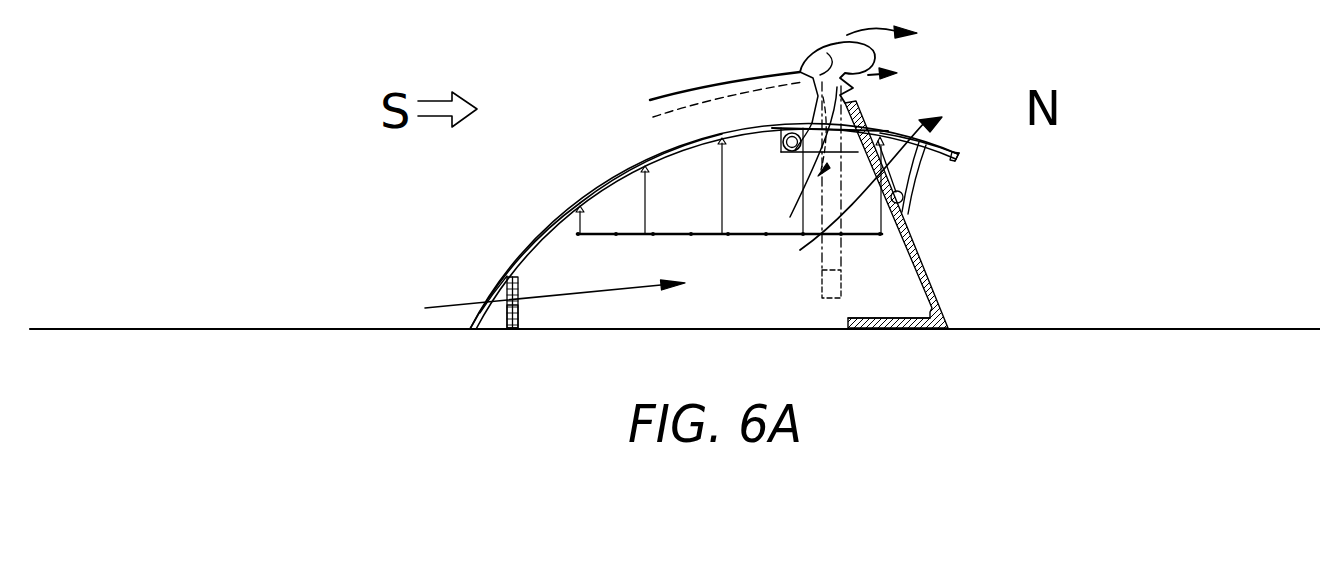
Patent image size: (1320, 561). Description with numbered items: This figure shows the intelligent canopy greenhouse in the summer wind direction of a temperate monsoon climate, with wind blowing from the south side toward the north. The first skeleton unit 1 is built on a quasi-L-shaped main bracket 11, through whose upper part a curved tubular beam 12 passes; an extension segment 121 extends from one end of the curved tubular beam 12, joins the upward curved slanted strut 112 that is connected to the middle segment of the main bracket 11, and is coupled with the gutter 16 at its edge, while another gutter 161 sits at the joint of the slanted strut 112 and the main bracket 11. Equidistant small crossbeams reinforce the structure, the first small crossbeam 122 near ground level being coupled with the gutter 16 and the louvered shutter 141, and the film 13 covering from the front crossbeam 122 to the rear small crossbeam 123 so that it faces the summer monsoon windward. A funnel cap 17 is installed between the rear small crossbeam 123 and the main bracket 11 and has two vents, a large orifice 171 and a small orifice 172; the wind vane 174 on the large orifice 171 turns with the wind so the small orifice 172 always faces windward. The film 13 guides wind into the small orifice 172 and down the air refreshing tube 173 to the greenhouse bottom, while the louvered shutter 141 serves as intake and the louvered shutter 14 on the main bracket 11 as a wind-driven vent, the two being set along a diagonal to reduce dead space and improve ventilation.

The first skeleton unit 1 is at (590, 111).
The main bracket 11 is at (937, 292).
The upward curved slanted strut 112 is at (905, 201).
The curved tubular beam 12 is at (547, 224).
The extension segment 121 is at (953, 148).
The first small crossbeam 122 is at (522, 262).
The rear small crossbeam 123 is at (778, 141).
The film 13 is at (597, 181).
The louvered shutter 14 is at (926, 168).
The louvered shutter 141 is at (507, 312).
The gutter 16 is at (496, 275).
The gutter 161 is at (960, 151).
The funnel cap 17 is at (810, 100).
The large orifice 171 is at (853, 90).
The small orifice 172 is at (803, 78).
The air refreshing tube 173 is at (825, 270).
The wind vane 174 is at (863, 53).